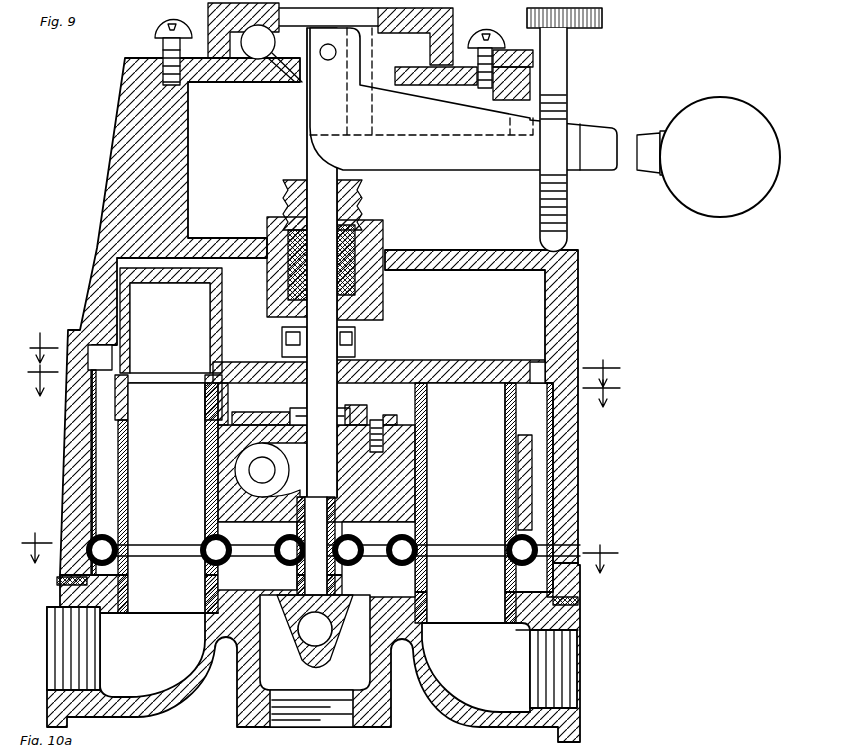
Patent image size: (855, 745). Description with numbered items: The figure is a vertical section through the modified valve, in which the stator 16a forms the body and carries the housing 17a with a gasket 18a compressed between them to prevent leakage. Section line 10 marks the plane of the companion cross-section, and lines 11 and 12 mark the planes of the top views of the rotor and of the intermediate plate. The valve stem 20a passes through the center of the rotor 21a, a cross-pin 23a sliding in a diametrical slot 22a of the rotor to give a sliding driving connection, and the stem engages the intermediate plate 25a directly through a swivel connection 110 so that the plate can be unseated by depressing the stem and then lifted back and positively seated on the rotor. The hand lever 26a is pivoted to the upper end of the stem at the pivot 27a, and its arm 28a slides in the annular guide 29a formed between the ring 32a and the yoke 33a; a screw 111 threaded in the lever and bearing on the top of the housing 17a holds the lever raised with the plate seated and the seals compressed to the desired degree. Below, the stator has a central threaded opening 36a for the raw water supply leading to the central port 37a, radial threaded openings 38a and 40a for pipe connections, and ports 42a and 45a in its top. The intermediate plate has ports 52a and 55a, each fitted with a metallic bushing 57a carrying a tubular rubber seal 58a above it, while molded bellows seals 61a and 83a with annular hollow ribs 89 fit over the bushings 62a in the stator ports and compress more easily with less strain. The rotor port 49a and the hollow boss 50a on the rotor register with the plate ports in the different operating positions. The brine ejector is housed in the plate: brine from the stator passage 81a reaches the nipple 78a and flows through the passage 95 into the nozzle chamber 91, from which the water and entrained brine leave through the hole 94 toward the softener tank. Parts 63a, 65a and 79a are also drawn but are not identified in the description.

The section line 10— 10 is at (321, 559).
The section line 11— 11 is at (325, 360).
The section line 12— 12 is at (324, 386).
The stator 16a is at (580, 618).
The housing 17a is at (570, 492).
The gasket 18a is at (578, 601).
The stem 20a is at (322, 158).
The rotor 21a is at (390, 372).
The diametrical slot 22a is at (290, 350).
The cross-pin 23a is at (356, 345).
The intermediate plate 25a is at (533, 455).
The hand lever 26a is at (478, 158).
The pivot 27a is at (328, 61).
The arm 28a is at (258, 60).
The annular guide 29a is at (420, 48).
The ring 32a is at (535, 60).
The yoke 33a is at (500, 88).
The central axial threaded opening 36a is at (340, 725).
The central port 37a is at (268, 605).
The radial threaded opening 38a is at (50, 668).
The radial threaded opening 40a is at (580, 678).
The stator port 42a is at (185, 640).
The stator port 45a is at (457, 630).
The rotor port 49a is at (152, 370).
The hollow boss 50a is at (220, 300).
The intermediate plate port 52a is at (160, 494).
The intermediate plate port 55a is at (465, 503).
The metallic bushing 57a is at (210, 497).
The tubular rubber seal 58a is at (226, 400).
The tubular seal 61a is at (203, 576).
The metallic bushing 62a is at (122, 614).
The stop block 63a is at (560, 365).
The sleeve 65a is at (540, 530).
The nipple 78a is at (345, 536).
The valve chamber 79a is at (290, 640).
The brine passage 81a is at (322, 642).
The tubular seal 83a is at (345, 580).
The annular hollow ribs 89 is at (257, 556).
The nozzle chamber 91 is at (256, 497).
The hole 94 is at (272, 482).
The passage 95 is at (314, 462).
The swivel connection 110 is at (352, 410).
The screw 111 is at (560, 193).